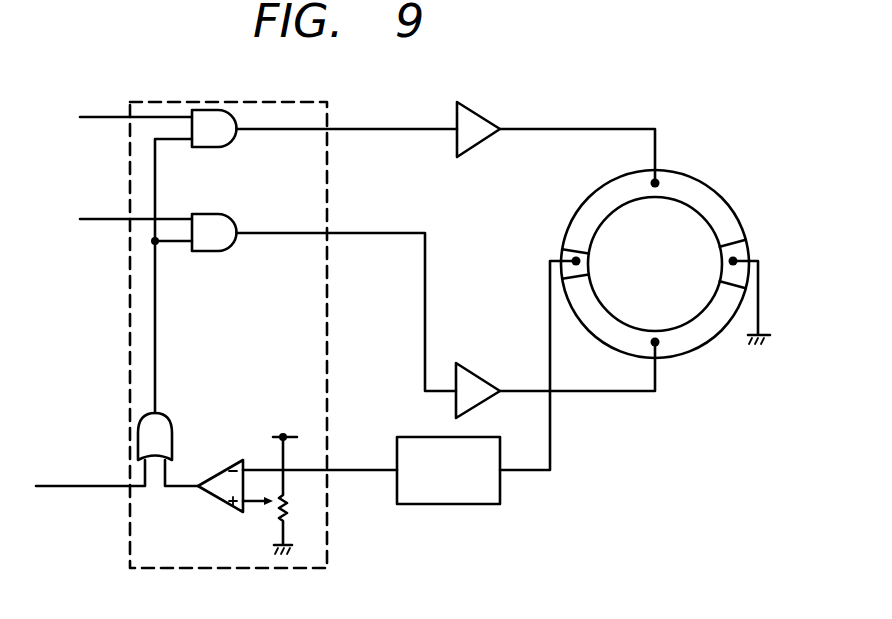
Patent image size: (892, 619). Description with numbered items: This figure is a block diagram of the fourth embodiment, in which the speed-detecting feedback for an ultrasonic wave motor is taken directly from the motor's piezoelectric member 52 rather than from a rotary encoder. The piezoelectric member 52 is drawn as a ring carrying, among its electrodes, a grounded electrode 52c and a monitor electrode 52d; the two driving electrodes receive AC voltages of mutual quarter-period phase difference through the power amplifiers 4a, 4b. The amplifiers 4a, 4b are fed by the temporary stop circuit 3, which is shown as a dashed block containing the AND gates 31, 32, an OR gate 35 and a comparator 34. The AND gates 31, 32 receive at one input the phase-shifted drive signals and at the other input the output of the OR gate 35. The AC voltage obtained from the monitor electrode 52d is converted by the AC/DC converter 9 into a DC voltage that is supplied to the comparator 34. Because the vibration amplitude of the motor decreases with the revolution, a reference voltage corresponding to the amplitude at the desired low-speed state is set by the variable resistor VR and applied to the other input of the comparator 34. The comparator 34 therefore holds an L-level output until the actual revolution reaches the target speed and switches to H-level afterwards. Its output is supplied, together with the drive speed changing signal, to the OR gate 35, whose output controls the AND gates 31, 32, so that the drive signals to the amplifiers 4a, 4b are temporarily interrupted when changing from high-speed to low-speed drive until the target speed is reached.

The temporary stop circuit 3 is at (277, 100).
The AND gate 31 is at (208, 148).
The AND gate 32 is at (208, 252).
The comparator 34 is at (218, 498).
The OR gate 35 is at (170, 431).
The power amplifier 4a is at (494, 109).
The power amplifier 4b is at (477, 376).
The AC/DC converter 9 is at (502, 453).
The piezoelectric member 52 is at (697, 179).
The electrode 52c is at (746, 253).
The monitor electrode 52d is at (563, 253).
The variable resistor VR is at (282, 493).